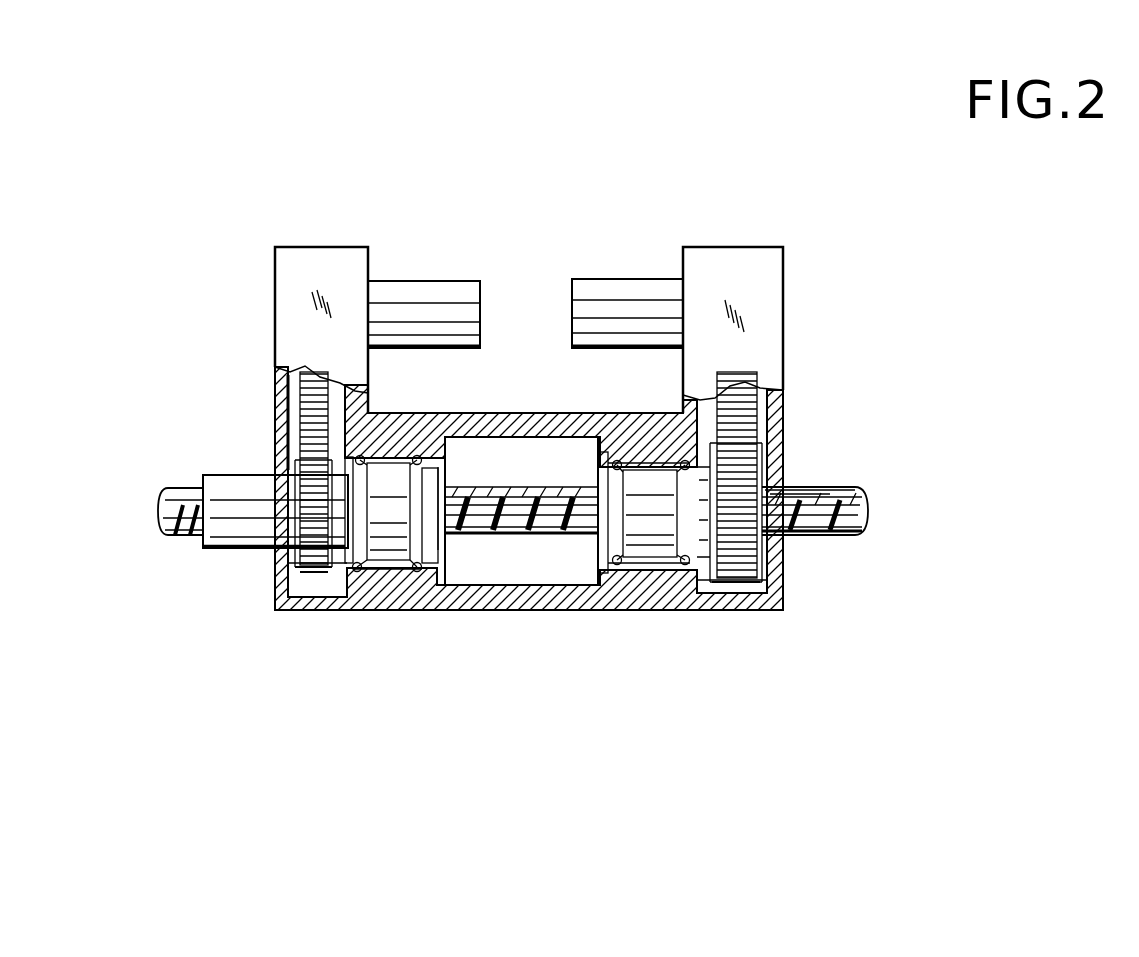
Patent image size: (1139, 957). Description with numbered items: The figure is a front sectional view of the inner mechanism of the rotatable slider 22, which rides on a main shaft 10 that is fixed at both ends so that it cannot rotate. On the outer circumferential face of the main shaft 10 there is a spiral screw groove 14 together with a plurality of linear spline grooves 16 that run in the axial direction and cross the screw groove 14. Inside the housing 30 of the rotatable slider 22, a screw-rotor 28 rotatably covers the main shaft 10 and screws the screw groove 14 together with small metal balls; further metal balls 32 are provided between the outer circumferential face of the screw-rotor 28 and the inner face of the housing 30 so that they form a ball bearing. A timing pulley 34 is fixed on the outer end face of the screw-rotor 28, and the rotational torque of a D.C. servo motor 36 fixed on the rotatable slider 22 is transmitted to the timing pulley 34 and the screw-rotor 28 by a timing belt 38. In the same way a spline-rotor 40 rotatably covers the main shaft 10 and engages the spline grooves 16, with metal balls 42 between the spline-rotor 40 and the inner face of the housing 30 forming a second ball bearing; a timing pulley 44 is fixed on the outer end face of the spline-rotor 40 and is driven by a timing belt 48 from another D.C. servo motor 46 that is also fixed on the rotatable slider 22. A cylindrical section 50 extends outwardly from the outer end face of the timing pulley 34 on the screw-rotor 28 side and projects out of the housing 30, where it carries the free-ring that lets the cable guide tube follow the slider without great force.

The main shaft 10 is at (874, 522).
The screw groove 14 is at (835, 500).
The spline grooves 16 is at (828, 487).
The rotatable slider 22 is at (659, 170).
The screw-rotor 28 is at (372, 607).
The housing 30 is at (505, 414).
The metal balls 32 is at (357, 607).
The timing pulley 34 is at (300, 563).
The D.C. servo motor 36 is at (402, 287).
The timing belt 38 is at (312, 407).
The spline-rotor 40 is at (656, 554).
The metal balls 42 is at (607, 610).
The timing pulley 44 is at (797, 600).
The D.C. servo motor 46 is at (640, 283).
The timing belt 48 is at (762, 417).
The cylindrical section 50 is at (227, 487).